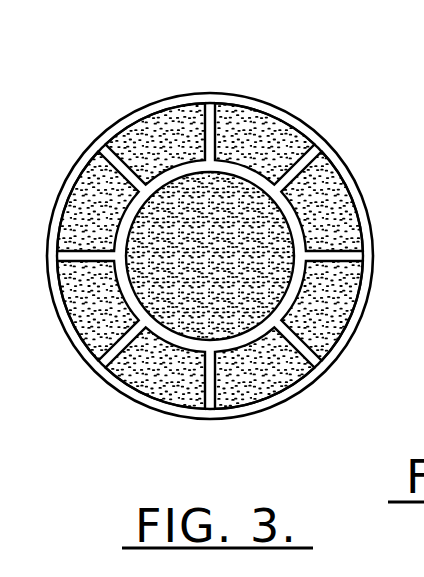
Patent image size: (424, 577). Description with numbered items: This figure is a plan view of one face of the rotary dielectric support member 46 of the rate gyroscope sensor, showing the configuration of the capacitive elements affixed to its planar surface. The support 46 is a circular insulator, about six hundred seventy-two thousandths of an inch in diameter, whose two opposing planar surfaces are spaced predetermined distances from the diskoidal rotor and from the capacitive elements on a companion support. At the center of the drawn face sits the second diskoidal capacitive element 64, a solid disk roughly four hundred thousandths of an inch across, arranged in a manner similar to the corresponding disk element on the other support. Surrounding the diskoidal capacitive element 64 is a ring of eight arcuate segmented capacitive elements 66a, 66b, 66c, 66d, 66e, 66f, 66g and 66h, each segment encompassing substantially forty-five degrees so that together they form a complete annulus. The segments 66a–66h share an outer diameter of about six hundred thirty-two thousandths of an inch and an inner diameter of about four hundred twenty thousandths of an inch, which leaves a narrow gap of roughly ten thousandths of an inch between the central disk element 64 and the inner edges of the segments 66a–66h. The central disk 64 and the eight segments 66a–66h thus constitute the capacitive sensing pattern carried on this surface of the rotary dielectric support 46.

The rotary dielectric support member 46 is at (212, 93).
The second diskoidal capacitive element 64 is at (201, 336).
The arcuate segmented capacitive element 66a is at (263, 390).
The arcuate segmented capacitive element 66b is at (348, 312).
The arcuate segmented capacitive element 66c is at (340, 200).
The arcuate segmented capacitive element 66d is at (267, 122).
The arcuate segmented capacitive element 66e is at (147, 127).
The arcuate segmented capacitive element 66f is at (90, 177).
The arcuate segmented capacitive element 66g is at (78, 315).
The arcuate segmented capacitive element 66h is at (165, 392).